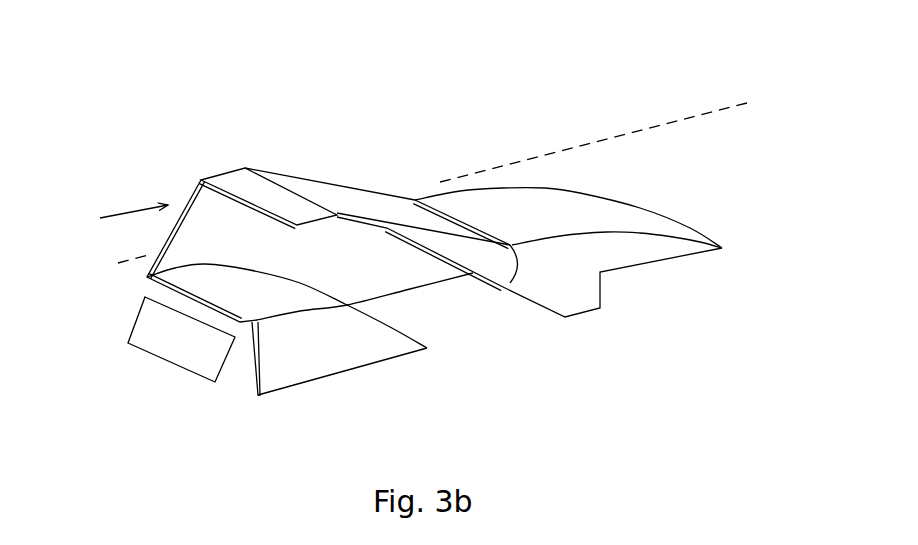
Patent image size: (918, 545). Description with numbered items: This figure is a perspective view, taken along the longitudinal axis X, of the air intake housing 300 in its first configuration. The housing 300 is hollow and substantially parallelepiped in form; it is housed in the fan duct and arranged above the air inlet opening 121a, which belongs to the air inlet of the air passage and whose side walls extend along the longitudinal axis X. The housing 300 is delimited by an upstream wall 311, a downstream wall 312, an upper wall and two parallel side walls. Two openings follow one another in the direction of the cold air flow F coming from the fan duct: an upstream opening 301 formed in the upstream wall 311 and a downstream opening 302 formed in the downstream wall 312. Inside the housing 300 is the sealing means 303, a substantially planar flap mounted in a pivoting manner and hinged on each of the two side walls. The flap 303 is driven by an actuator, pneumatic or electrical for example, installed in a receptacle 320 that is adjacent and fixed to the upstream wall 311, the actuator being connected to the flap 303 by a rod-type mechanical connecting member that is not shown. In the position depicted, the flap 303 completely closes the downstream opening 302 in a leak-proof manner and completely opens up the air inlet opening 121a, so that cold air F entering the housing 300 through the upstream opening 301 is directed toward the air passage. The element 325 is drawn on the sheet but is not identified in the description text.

The air intake housing 300 is at (232, 130).
The upstream opening 301 is at (137, 278).
The downstream opening 302 is at (410, 165).
The sealing means 303 is at (367, 190).
The upstream wall 311 is at (252, 383).
The downstream wall 312 is at (647, 212).
The receptacle 320 is at (330, 355).
The mounting box 325 is at (158, 360).
The inlet opening 121a is at (477, 353).
The cold air flow F is at (136, 213).
The longitudinal axis X is at (728, 108).